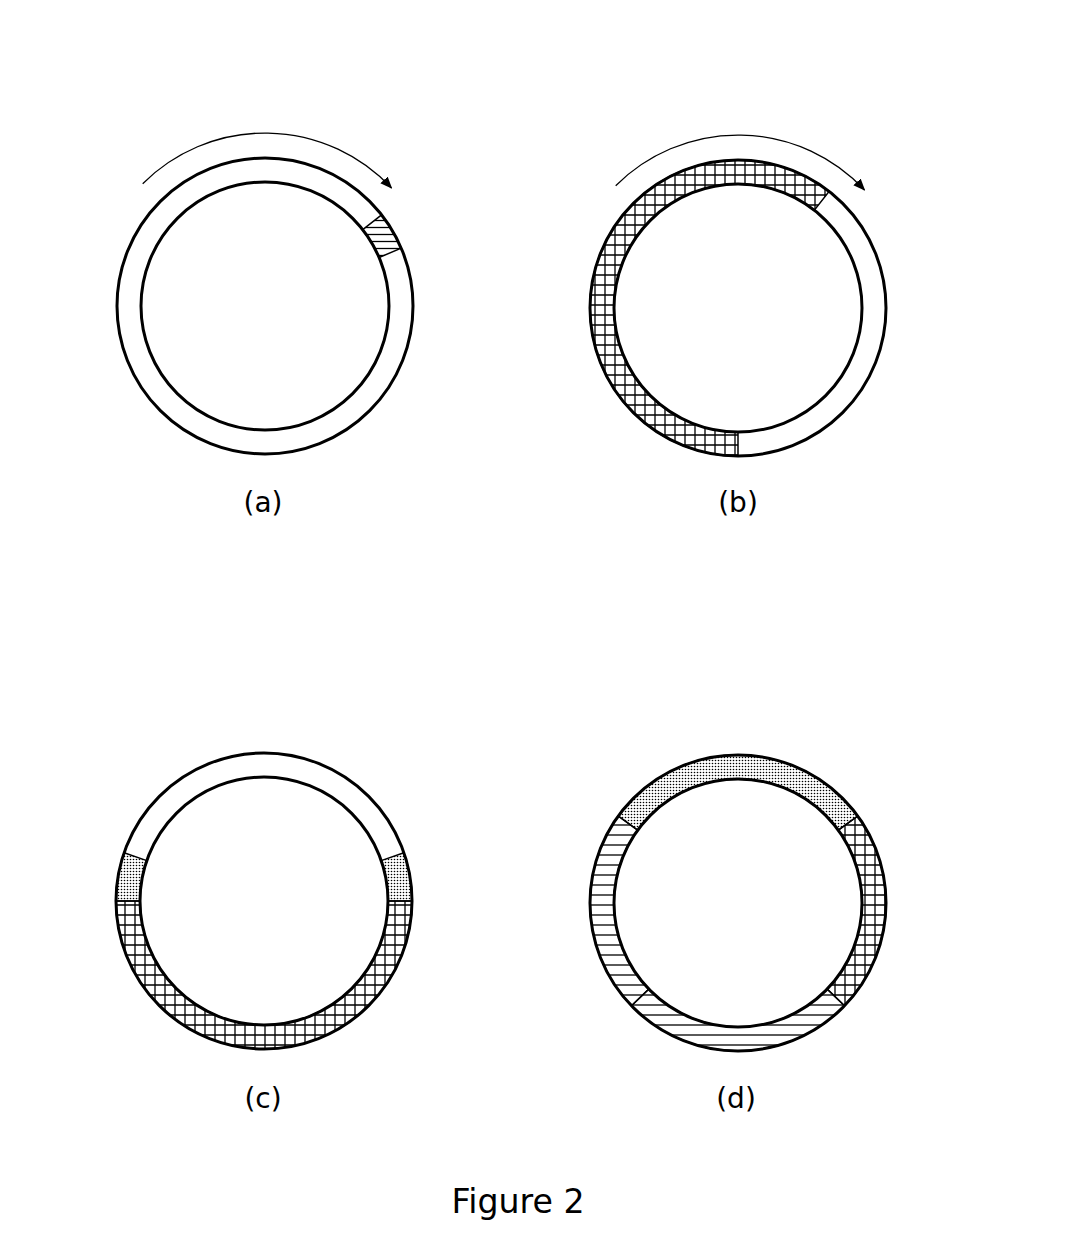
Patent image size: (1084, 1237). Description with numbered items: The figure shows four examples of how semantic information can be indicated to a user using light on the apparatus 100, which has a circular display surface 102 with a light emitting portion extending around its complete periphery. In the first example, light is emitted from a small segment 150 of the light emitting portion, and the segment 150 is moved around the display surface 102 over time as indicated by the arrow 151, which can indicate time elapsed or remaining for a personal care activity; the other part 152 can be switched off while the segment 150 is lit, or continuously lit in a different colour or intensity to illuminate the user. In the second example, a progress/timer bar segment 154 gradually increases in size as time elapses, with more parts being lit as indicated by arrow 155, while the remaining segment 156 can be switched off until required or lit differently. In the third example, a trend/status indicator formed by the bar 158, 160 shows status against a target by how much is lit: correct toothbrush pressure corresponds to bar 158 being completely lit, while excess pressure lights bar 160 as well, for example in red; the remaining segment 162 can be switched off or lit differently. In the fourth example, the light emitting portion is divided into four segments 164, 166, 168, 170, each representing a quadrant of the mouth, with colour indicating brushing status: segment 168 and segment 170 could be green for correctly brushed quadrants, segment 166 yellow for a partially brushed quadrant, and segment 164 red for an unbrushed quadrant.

The apparatus 100 is at (413, 140).
The display surface 102 is at (197, 347).
The segment 150 is at (383, 233).
The arrow 151 is at (252, 133).
The other part 152 is at (388, 365).
The progress/timer bar segment 154 is at (612, 260).
The arrow 155 is at (735, 136).
The remaining segment 156 is at (860, 365).
The trend/status bar 158 is at (388, 960).
The trend/status bar 160 is at (118, 893).
The remaining segment 162 is at (257, 767).
The segment 164 is at (738, 768).
The segment 166 is at (860, 960).
The segment 168 is at (772, 1033).
The segment 170 is at (608, 882).